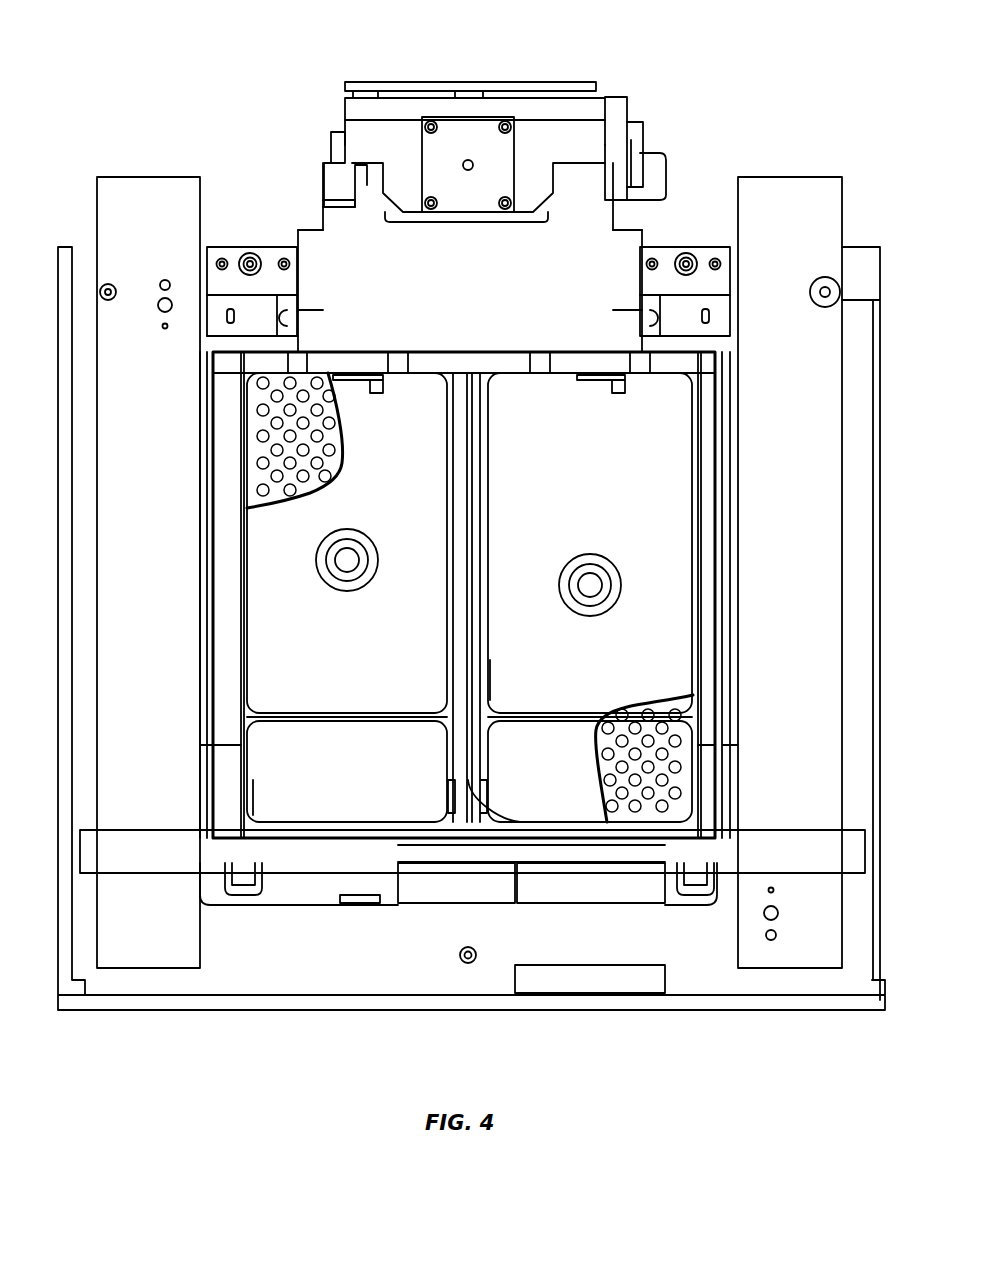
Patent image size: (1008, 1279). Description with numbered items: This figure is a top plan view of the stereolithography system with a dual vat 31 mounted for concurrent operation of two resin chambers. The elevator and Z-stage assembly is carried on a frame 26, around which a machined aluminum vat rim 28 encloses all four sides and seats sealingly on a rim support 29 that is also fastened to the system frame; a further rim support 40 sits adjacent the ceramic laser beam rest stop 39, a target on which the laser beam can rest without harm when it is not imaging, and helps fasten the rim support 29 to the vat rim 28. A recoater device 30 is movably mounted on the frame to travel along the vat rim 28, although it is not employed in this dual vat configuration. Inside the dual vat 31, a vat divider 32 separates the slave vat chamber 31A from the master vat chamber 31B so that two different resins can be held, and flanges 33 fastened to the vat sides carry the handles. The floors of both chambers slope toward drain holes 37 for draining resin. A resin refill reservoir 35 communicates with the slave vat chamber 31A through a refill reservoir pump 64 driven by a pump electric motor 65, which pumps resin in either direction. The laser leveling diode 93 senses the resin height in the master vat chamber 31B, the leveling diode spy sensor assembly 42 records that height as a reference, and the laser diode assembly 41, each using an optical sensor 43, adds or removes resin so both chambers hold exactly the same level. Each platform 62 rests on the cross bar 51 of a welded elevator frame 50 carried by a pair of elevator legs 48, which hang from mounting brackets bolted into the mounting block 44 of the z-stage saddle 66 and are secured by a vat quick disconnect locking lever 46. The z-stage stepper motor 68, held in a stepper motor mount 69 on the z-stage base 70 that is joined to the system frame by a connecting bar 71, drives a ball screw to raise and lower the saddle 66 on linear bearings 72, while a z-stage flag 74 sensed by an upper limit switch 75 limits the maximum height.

The frame 26 is at (243, 896).
The vat rim 28 is at (469, 585).
The rim support 29 is at (60, 292).
The recoater device 30 is at (88, 873).
The dual vat 31 is at (377, 830).
The slave vat chamber 31A is at (590, 597).
The master vat chamber 31B is at (347, 597).
The vat divider 32 is at (500, 812).
The flanges 33 is at (735, 373).
The resin refill reservoir 35 is at (591, 883).
The drain holes 37 is at (347, 568).
The ceramic laser beam rest stop 39 is at (822, 277).
The rim support 40 is at (862, 247).
The laser diode assembly 41 is at (712, 247).
The leveling diode spy sensor assembly 42 is at (230, 247).
The optical sensor 43 is at (225, 318).
The mounting block 44 is at (433, 257).
The vat quick disconnect locking lever 46 is at (370, 384).
The elevator legs 48 is at (398, 363).
The elevator frame 50 is at (248, 800).
The cross bar 51 is at (350, 713).
The platform 62 is at (342, 470).
The refill reservoir pump 64 is at (456, 883).
The pump electric motor 65 is at (373, 893).
The z-stage saddle 66 is at (468, 222).
The z-stage stepper motor 68 is at (468, 164).
The stepper motor mount 69 is at (345, 123).
The z-stage base 70 is at (345, 105).
The connecting bar 71 is at (398, 82).
The linear bearings 72 is at (331, 148).
The z-stage flag 74 is at (664, 188).
The upper limit switch 75 is at (645, 157).
The laser leveling diode 93 is at (310, 230).